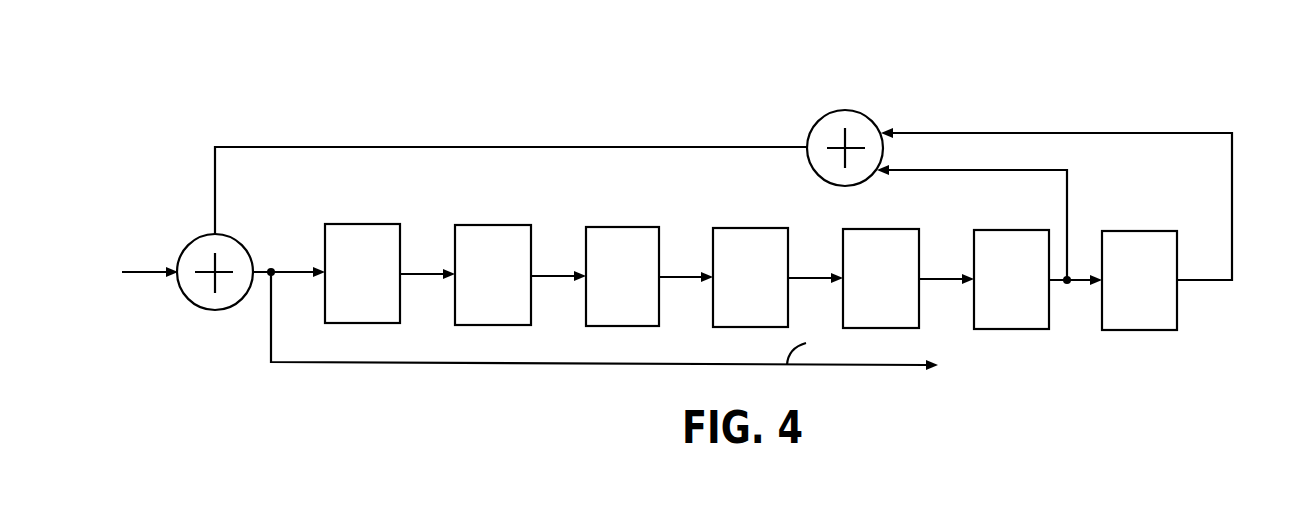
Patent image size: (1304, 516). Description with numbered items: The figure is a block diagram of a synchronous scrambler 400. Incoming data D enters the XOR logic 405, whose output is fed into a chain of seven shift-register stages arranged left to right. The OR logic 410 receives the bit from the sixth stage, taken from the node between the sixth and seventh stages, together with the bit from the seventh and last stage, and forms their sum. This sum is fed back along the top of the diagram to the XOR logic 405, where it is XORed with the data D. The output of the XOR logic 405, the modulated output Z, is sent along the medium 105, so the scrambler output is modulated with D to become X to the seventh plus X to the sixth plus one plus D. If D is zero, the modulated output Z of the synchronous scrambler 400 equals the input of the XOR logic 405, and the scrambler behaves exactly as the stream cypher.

The synchronous scrambler 400 is at (490, 98).
The XOR logic 405 is at (215, 310).
The OR logic 410 is at (845, 110).
The medium (link) 105 is at (670, 340).